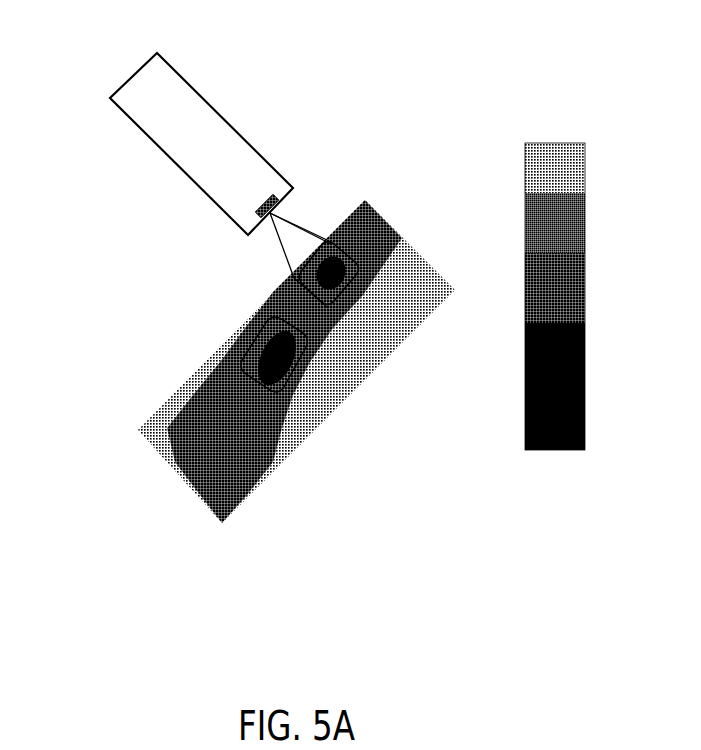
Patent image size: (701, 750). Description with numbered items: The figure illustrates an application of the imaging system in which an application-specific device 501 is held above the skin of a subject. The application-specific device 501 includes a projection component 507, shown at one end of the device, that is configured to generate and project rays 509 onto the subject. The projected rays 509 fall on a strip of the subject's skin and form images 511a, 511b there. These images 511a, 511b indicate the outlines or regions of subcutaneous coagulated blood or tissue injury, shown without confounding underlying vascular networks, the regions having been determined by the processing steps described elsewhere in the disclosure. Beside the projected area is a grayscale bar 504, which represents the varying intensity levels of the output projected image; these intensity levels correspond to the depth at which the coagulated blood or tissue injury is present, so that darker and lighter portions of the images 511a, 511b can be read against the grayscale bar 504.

The application-specific device 501 is at (265, 94).
The grayscale bar 504 is at (555, 275).
The projection component 507 is at (287, 189).
The rays 509 is at (336, 206).
The image 511a is at (350, 283).
The image 511b is at (290, 372).